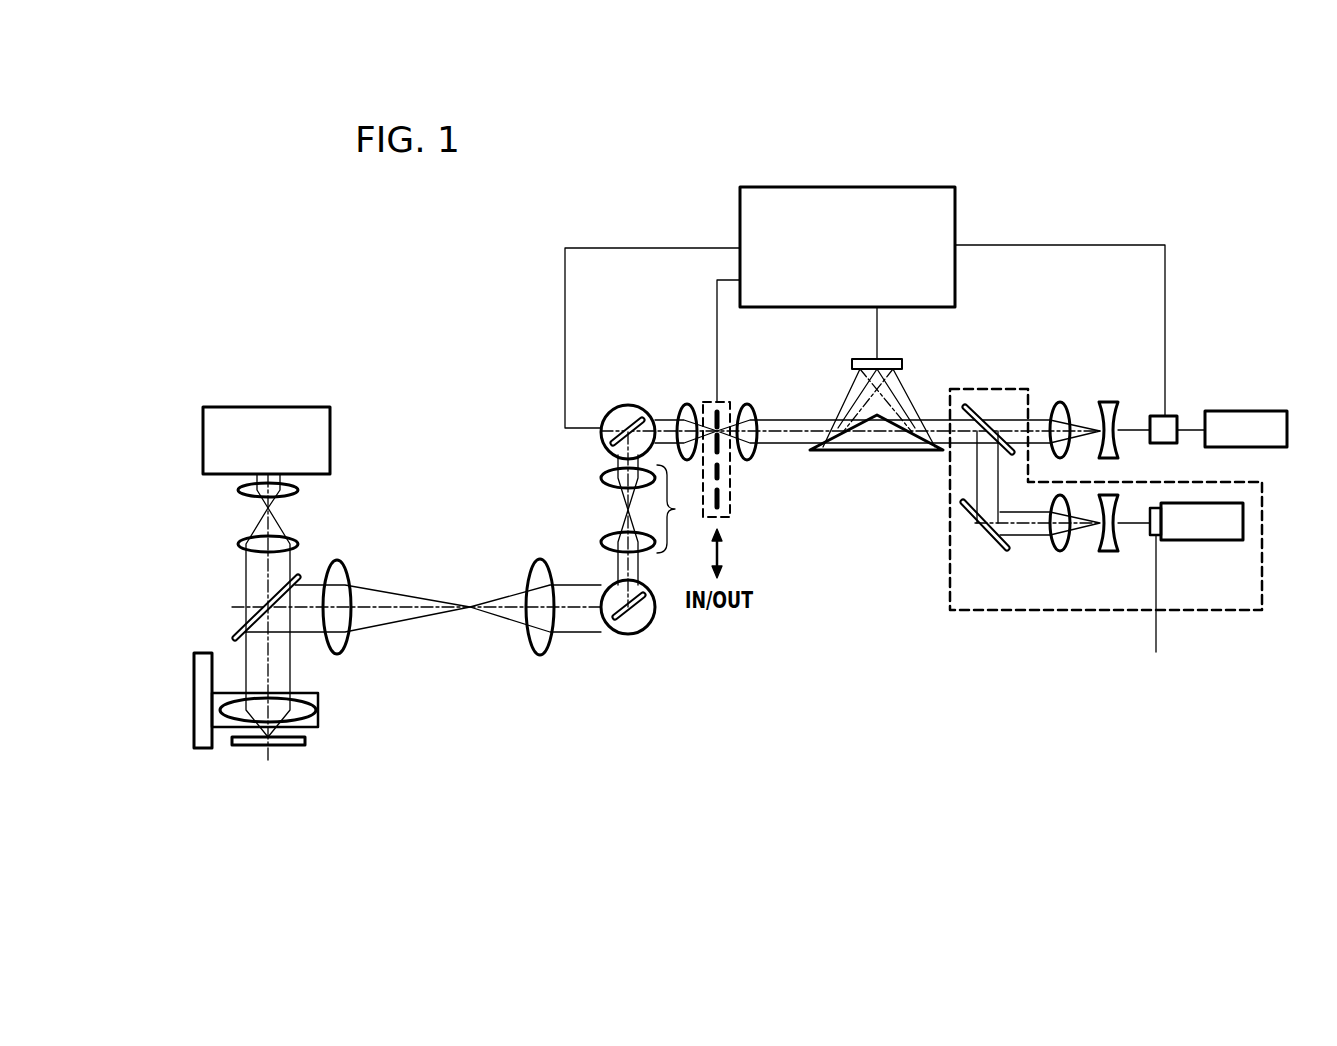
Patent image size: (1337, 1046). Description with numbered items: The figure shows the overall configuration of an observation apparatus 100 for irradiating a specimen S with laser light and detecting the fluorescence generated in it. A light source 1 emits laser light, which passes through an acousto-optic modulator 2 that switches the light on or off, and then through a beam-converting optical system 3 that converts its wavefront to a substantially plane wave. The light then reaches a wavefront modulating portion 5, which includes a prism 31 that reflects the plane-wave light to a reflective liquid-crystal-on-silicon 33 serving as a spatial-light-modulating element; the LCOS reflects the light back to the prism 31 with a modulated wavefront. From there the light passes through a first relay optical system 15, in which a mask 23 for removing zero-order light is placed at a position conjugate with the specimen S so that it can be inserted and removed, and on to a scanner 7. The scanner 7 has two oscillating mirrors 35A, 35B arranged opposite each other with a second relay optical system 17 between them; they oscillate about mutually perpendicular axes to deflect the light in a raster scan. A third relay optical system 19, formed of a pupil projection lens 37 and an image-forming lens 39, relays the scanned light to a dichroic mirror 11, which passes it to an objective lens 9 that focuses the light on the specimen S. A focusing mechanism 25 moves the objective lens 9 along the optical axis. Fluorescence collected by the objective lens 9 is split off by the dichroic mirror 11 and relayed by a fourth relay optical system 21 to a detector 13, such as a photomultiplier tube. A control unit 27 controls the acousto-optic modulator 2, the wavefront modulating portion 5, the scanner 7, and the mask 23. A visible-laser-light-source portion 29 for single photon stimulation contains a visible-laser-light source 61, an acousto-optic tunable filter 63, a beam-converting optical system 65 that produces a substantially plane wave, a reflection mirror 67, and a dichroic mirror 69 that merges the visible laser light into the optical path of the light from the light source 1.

The observation apparatus 100 is at (1008, 163).
The light source 1 is at (1275, 448).
The acousto-optic modulator 2 is at (1170, 415).
The beam-converting optical system 3 is at (1127, 402).
The wavefront modulating portion 5 is at (874, 481).
The scanner 7 is at (633, 520).
The objective lens 9 is at (318, 698).
The dichroic mirror 11 is at (242, 633).
The detector 13 is at (265, 408).
The first relay optical system 15 is at (718, 440).
The second relay optical system 17 is at (650, 519).
The third relay optical system 19 is at (440, 621).
The fourth relay optical system 21 is at (235, 478).
The mask 23 is at (720, 453).
The focusing mechanism 25 is at (203, 750).
The control unit 27 is at (845, 185).
The visible-laser-light-source portion 29 is at (1106, 525).
The prism 31 is at (915, 452).
The reflective liquid-crystal-on-silicon 33 is at (851, 363).
The oscillating mirror 35A is at (630, 418).
The oscillating mirror 35B is at (632, 618).
The pupil projection lens 37 is at (540, 653).
The image-forming lens 39 is at (348, 642).
The visible-laser-light source 61 is at (1205, 542).
The acousto-optic tunable filter 63 is at (1155, 538).
The beam-converting optical system 65 is at (1127, 548).
The reflection mirror 67 is at (975, 518).
The dichroic mirror 69 is at (980, 411).
The specimen S is at (305, 737).